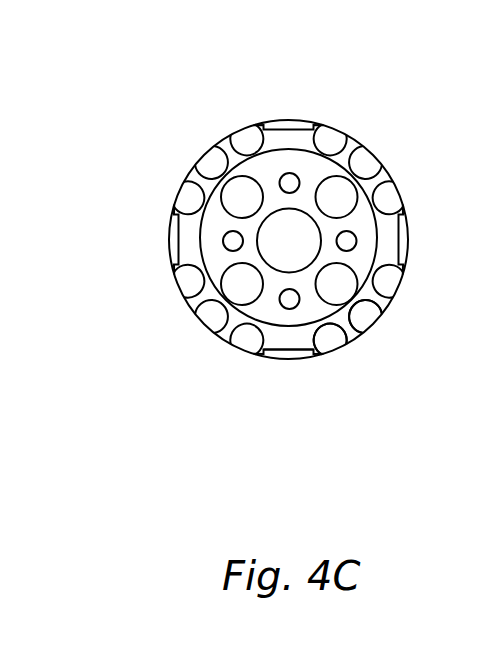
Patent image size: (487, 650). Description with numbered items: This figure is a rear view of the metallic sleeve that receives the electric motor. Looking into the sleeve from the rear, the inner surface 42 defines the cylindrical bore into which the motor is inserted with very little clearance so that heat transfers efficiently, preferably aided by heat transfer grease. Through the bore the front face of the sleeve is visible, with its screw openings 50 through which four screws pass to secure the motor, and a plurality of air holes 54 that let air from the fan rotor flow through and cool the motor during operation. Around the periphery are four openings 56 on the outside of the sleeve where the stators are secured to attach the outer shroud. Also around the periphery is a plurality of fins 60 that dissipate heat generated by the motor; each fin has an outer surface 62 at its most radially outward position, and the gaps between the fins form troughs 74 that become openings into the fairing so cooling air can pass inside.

The inner surface 42 is at (368, 222).
The screw openings 50 is at (301, 172).
The air holes 54 is at (243, 297).
The openings 56 is at (290, 352).
The fins 60 is at (351, 330).
The outer surface 62 is at (388, 305).
The troughs 74 is at (395, 283).